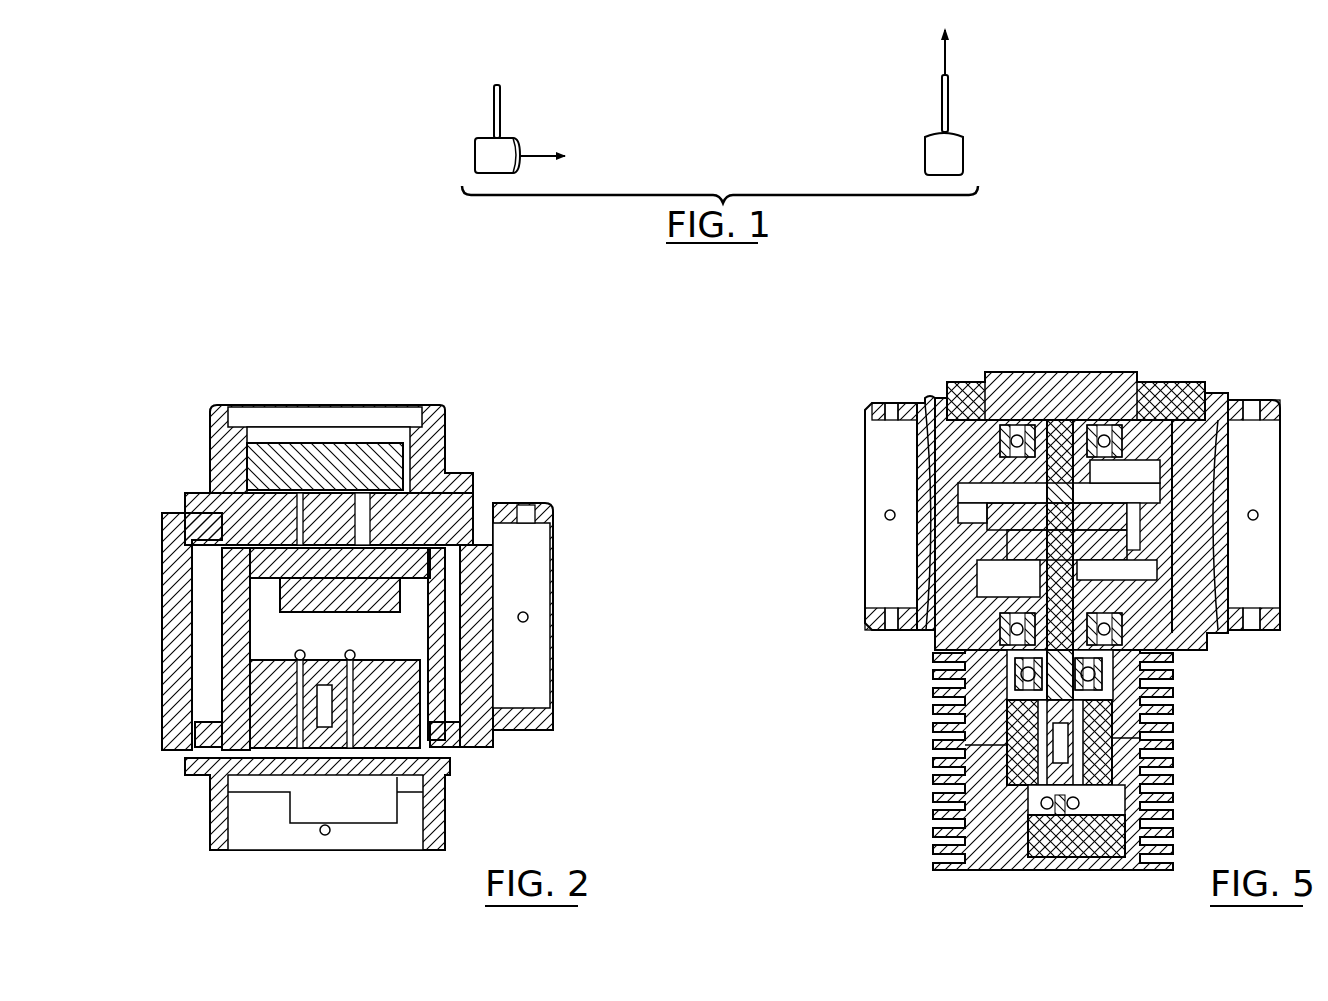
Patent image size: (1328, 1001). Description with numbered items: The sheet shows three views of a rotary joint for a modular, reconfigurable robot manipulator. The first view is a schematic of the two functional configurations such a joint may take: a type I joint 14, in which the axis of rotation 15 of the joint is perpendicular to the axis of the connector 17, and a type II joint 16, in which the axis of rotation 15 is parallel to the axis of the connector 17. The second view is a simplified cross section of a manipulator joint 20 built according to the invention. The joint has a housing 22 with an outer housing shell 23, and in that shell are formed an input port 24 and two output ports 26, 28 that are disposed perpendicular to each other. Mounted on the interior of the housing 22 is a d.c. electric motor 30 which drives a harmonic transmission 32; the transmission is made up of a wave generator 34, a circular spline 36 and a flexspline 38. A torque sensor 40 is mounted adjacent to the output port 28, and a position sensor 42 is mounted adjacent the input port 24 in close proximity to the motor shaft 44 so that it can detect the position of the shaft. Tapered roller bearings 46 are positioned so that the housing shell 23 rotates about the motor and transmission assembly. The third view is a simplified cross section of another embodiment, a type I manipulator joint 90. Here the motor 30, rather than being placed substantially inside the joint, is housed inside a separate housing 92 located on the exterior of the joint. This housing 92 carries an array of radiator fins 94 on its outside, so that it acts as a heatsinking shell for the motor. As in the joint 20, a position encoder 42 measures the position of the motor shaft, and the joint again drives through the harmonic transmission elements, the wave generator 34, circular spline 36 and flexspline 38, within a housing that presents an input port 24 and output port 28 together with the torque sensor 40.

In FIG. 1, the type I joint 14 is at (470, 155).
In FIG. 1, the axis of rotation 15 is at (540, 145).
In FIG. 1, the type II joint 16 is at (963, 158).
In FIG. 1, the connector 17 is at (500, 110).
In FIG. 2, the manipulator joint 20 is at (160, 386).
In FIG. 2, the housing 22 is at (470, 492).
In FIG. 5, the housing 22 is at (1081, 521).
In FIG. 2, the outer housing shell 23 is at (163, 610).
In FIG. 2, the input port 24 is at (350, 850).
In FIG. 5, the input port 24 is at (1263, 470).
In FIG. 2, the output port 26 is at (540, 540).
In FIG. 2, the output port 28 is at (400, 410).
In FIG. 5, the output port 28 is at (868, 512).
In FIG. 2, the d.c. electric motor 30 is at (300, 725).
In FIG. 5, the d.c. electric motor 30 is at (1060, 737).
In FIG. 2, the harmonic transmission 32 is at (368, 548).
In FIG. 5, the harmonic transmission 32 is at (1060, 560).
In FIG. 2, the wave generator 34 is at (255, 622).
In FIG. 5, the wave generator 34 is at (985, 590).
In FIG. 2, the circular spline 36 is at (232, 585).
In FIG. 5, the circular spline 36 is at (962, 568).
In FIG. 2, the flexspline 38 is at (250, 560).
In FIG. 5, the flexspline 38 is at (957, 503).
In FIG. 2, the torque sensor 40 is at (285, 452).
In FIG. 5, the torque sensor 40 is at (1070, 385).
In FIG. 2, the position sensor 42 is at (385, 818).
In FIG. 5, the position sensor 42 is at (1105, 847).
In FIG. 2, the motor shaft 44 is at (318, 836).
In FIG. 5, the motor shaft 44 is at (1057, 790).
In FIG. 2, the tapered roller bearings 46 is at (432, 556).
In FIG. 5, the type I manipulator joint 90 is at (1245, 355).
In FIG. 5, the housing 92 is at (1133, 788).
In FIG. 5, the radiator fins 94 is at (937, 820).